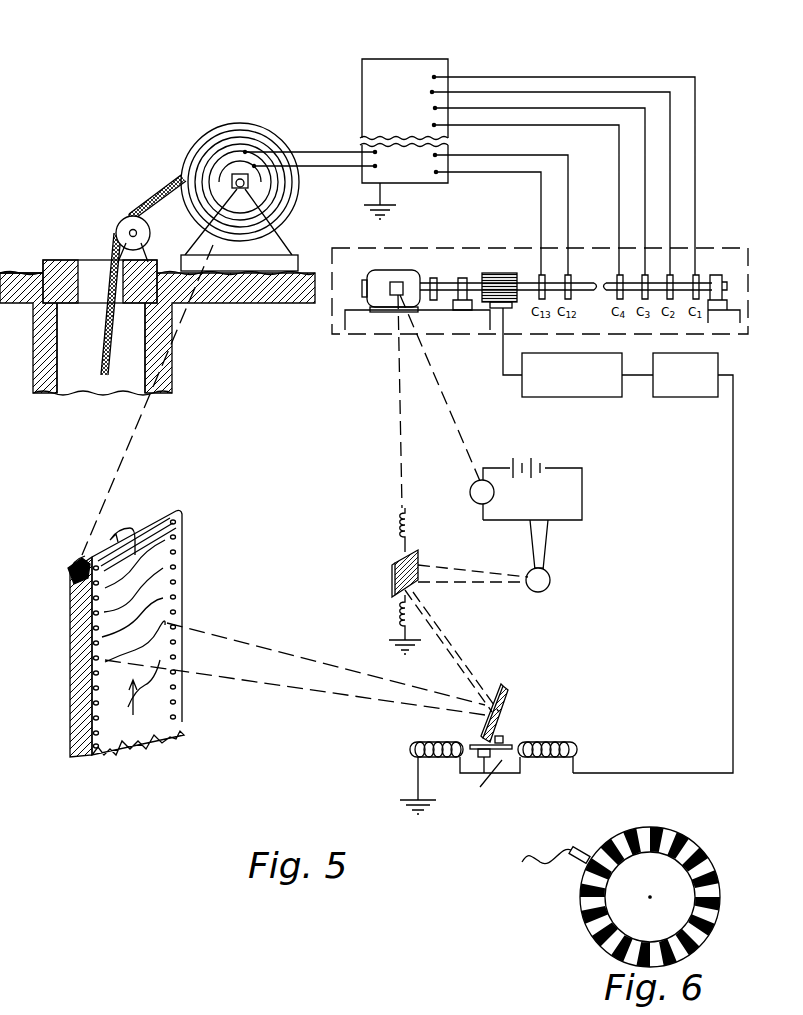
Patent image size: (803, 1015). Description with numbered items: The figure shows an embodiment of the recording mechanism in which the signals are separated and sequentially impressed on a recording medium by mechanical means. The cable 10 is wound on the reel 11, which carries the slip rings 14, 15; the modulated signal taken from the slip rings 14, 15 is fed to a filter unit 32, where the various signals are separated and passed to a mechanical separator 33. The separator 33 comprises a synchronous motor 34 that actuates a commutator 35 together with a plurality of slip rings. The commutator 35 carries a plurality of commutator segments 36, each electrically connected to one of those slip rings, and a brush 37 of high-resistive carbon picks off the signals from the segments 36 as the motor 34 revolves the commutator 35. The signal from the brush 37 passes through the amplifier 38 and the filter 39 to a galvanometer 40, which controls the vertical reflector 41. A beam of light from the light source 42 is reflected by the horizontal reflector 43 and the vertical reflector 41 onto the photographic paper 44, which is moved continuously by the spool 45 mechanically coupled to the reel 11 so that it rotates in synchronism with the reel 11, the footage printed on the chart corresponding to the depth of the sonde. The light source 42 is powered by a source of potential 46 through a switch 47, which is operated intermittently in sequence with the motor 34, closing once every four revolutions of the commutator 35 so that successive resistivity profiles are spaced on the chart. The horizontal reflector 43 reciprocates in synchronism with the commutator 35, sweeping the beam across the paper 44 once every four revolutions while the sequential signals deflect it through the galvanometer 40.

In FIG. 5, the cable 10 is at (116, 222).
In FIG. 5, the reel 11 is at (292, 207).
In FIG. 5, the slip ring 14 is at (219, 152).
In FIG. 5, the slip ring 15 is at (222, 170).
In FIG. 5, the filter unit 32 is at (386, 59).
In FIG. 5, the mechanical separator 33 is at (440, 248).
In FIG. 5, the synchronous motor 34 is at (382, 270).
In FIG. 5, the commutator 35 is at (512, 273).
In FIG. 6, the commutator segment 36 is at (583, 916).
In FIG. 5, the brush 37 is at (495, 308).
In FIG. 6, the brush 37 is at (591, 848).
In FIG. 5, the amplifier 38 is at (553, 397).
In FIG. 5, the filter 39 is at (665, 397).
In FIG. 5, the galvanometer 40 is at (410, 750).
In FIG. 5, the vertical reflector 41 is at (508, 700).
In FIG. 5, the light source 42 is at (550, 582).
In FIG. 5, the horizontal reflector 43 is at (393, 565).
In FIG. 5, the photographic paper 44 is at (167, 572).
In FIG. 5, the spool 45 is at (70, 570).
In FIG. 5, the source of potential 46 is at (514, 458).
In FIG. 5, the switch 47 is at (470, 490).